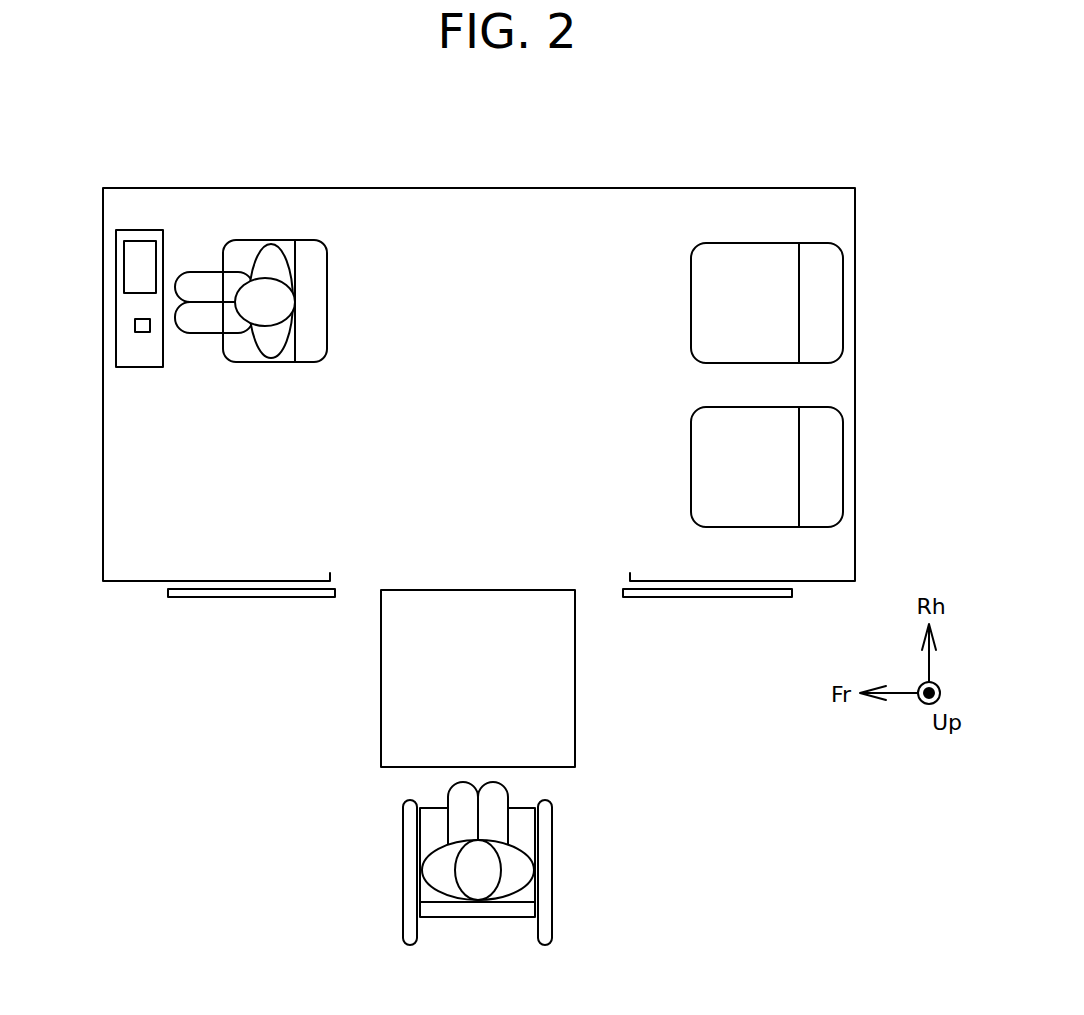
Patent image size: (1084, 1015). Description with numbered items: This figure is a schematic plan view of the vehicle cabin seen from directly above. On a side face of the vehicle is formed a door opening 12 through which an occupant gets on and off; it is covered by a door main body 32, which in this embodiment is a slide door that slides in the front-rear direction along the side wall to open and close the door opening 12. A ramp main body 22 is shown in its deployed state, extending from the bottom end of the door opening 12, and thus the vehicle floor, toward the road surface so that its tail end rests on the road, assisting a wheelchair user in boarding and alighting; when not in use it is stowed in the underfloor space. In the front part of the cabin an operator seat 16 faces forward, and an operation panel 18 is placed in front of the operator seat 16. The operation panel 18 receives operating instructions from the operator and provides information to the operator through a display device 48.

The door opening 12 is at (358, 582).
The operator seat 16 is at (327, 300).
The operation panel 18 is at (137, 230).
The ramp main body 22 is at (575, 705).
The door main body 32 is at (222, 597).
The display device 48 is at (137, 265).